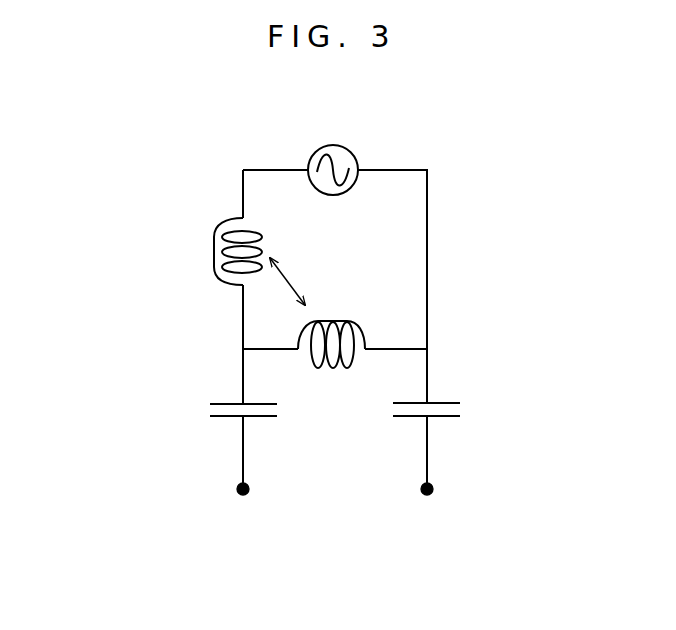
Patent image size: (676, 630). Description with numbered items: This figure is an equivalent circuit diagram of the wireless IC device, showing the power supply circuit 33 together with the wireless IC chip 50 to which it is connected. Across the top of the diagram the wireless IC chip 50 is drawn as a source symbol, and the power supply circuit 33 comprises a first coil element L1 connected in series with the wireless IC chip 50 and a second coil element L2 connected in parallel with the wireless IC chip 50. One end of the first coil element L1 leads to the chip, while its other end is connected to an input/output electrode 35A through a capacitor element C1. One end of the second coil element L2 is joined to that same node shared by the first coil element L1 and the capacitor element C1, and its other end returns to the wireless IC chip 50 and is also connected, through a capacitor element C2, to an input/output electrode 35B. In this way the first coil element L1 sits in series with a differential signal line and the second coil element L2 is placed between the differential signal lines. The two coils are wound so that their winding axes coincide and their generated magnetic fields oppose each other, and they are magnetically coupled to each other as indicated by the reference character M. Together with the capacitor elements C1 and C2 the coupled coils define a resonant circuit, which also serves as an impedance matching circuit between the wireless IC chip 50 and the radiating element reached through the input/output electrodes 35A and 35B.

The power supply circuit 33 is at (196, 321).
The wireless IC chip 50 is at (333, 145).
The first coil element L1 is at (223, 251).
The second coil element L2 is at (331, 329).
The magnetic coupling M is at (287, 278).
The capacitor element C1 is at (227, 413).
The capacitor element C2 is at (446, 412).
The input/output electrode 35A is at (236, 491).
The input/output electrode 35B is at (434, 489).